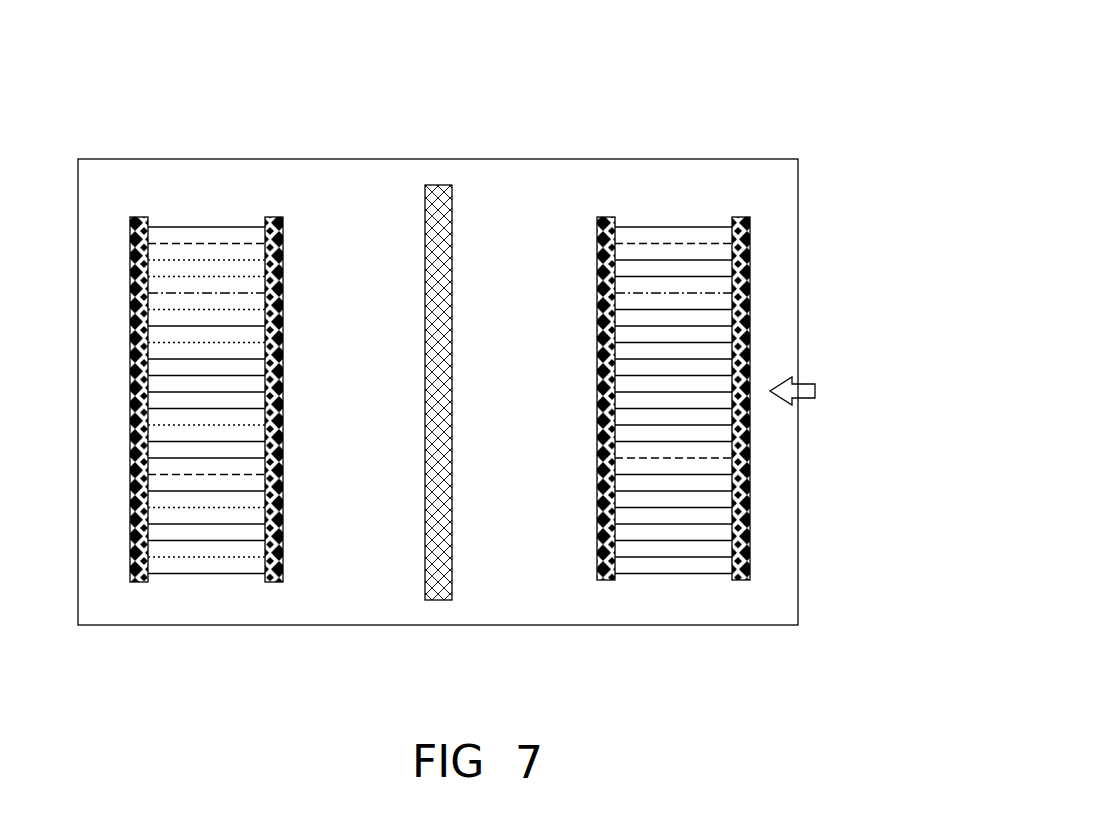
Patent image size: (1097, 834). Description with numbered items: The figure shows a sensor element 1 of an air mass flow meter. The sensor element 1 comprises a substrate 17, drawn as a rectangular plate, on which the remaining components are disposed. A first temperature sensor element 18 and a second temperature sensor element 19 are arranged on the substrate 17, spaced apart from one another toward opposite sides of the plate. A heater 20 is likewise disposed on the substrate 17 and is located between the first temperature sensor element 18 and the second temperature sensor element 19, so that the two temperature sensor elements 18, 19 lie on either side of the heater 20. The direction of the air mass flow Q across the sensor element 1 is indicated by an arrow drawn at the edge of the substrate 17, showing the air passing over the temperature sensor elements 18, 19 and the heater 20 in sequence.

The sensor element 1 is at (306, 121).
The substrate 17 is at (680, 168).
The first temperature sensor element 18 is at (670, 580).
The second temperature sensor element 19 is at (207, 582).
The heater 20 is at (437, 600).
The air mass flow Q is at (802, 378).